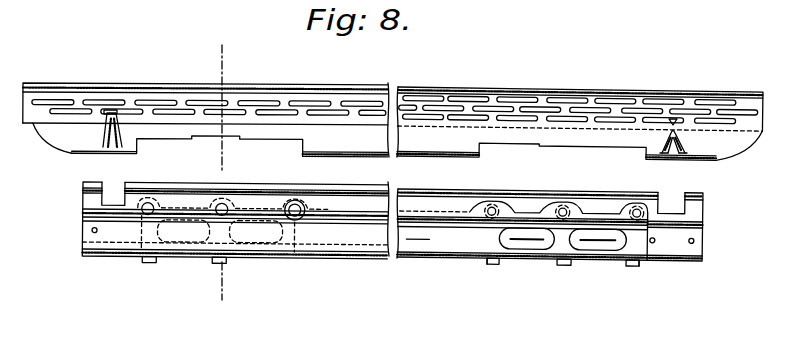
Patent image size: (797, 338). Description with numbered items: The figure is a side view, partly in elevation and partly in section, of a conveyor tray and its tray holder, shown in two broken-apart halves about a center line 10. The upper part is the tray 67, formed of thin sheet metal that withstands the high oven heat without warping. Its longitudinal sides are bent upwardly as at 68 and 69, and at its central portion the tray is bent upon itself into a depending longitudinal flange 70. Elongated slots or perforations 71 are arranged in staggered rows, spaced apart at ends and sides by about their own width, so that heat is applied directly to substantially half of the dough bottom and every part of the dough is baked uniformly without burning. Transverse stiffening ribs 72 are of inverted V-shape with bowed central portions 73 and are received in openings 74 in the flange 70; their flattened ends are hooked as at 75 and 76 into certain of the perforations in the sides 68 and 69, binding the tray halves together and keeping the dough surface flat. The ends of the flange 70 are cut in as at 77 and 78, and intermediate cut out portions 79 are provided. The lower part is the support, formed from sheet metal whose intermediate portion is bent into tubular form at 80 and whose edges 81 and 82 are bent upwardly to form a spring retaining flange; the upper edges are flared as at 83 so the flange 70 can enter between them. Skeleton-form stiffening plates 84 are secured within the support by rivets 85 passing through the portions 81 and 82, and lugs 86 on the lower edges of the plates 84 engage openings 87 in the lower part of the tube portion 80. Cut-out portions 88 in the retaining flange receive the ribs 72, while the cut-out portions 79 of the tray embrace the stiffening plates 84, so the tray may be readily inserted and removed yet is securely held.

The center line 10 is at (222, 173).
The tray 67 is at (272, 118).
The upwardly bent longitudinal side 68 is at (173, 100).
The upwardly bent longitudinal side 69 is at (490, 97).
The depending longitudinal flange 70 is at (384, 158).
The elongated slots or perforations 71 is at (367, 103).
The stiffening rib 72 is at (105, 126).
The bowed central portion of rib 73 is at (122, 136).
The opening in flange 74 is at (103, 138).
The hooked end of rib 75 is at (115, 110).
The hooked end of rib 76 is at (673, 118).
The cut-in end of flange 77 is at (59, 141).
The cut-in end of flange 78 is at (731, 148).
The cut out portion 79 is at (245, 135).
The tubular portion of support 80 is at (407, 262).
The upwardly bent edge of support 81 is at (322, 200).
The upwardly bent edge of support 82 is at (456, 208).
The flared upper edge 83 is at (393, 190).
The stiffening plate 84 is at (241, 261).
The rivet 85 is at (151, 203).
The lug 86 is at (213, 262).
The opening in tube portion 87 is at (486, 266).
The cut-out portion of retaining flange 88 is at (106, 202).